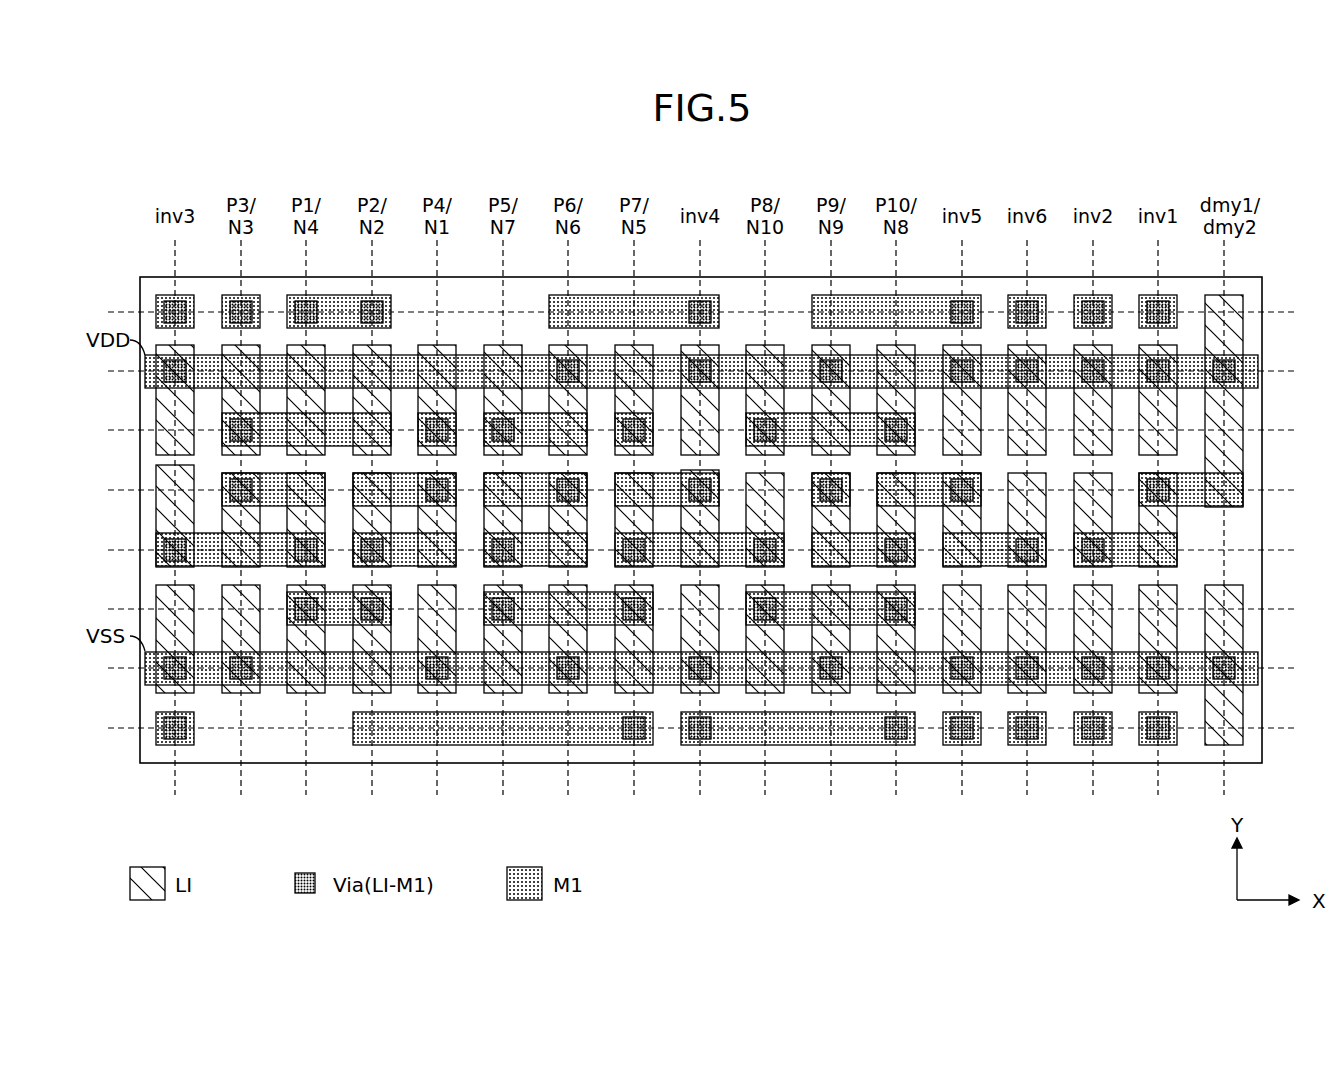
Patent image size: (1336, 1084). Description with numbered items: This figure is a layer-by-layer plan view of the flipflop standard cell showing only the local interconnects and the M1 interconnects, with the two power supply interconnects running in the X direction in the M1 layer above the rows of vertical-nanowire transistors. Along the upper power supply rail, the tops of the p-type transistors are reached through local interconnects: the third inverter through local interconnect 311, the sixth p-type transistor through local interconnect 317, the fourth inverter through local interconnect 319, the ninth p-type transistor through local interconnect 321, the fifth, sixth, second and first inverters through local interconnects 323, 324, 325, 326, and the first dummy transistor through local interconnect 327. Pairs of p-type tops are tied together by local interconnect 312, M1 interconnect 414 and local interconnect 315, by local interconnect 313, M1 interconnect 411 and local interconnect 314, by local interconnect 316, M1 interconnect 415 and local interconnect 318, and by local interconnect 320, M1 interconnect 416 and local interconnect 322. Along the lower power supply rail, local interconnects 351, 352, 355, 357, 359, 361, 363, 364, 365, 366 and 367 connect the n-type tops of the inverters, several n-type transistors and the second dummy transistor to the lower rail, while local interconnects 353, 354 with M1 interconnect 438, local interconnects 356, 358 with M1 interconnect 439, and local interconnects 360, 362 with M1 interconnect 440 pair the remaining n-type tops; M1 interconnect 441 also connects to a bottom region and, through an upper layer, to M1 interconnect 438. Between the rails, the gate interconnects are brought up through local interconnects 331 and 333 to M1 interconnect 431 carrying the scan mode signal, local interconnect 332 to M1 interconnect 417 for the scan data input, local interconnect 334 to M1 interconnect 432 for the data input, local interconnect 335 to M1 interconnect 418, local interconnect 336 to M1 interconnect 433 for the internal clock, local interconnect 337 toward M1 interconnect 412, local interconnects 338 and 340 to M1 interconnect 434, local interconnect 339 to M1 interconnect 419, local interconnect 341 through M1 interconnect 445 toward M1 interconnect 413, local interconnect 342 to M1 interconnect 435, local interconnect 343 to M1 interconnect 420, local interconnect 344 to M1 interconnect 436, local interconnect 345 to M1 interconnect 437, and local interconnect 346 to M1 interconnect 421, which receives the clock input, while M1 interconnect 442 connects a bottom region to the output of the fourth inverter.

The local interconnect 311 is at (183, 347).
The local interconnect 312 is at (249, 347).
The local interconnect 313 is at (300, 455).
The local interconnect 314 is at (365, 455).
The local interconnect 315 is at (432, 347).
The local interconnect 316 is at (490, 347).
The local interconnect 317 is at (561, 347).
The local interconnect 318 is at (624, 347).
The local interconnect 319 is at (691, 347).
The local interconnect 320 is at (778, 347).
The local interconnect 321 is at (836, 347).
The local interconnect 322 is at (910, 347).
The local interconnect 323 is at (975, 347).
The local interconnect 324 is at (1040, 347).
The local interconnect 325 is at (1106, 347).
The local interconnect 326 is at (1170, 347).
The local interconnect 327 is at (1243, 303).
The local interconnect 331 is at (196, 508).
The local interconnect 332 is at (262, 508).
The local interconnect 333 is at (327, 508).
The local interconnect 334 is at (393, 508).
The local interconnect 335 is at (459, 508).
The local interconnect 336 is at (524, 508).
The local interconnect 337 is at (590, 508).
The local interconnect 338 is at (655, 508).
The local interconnect 339 is at (719, 485).
The local interconnect 340 is at (760, 473).
The local interconnect 341 is at (812, 515).
The local interconnect 342 is at (877, 480).
The local interconnect 343 is at (982, 508).
The local interconnect 344 is at (1047, 508).
The local interconnect 345 is at (1114, 508).
The local interconnect 346 is at (1179, 508).
The local interconnect 351 is at (182, 693).
The local interconnect 352 is at (248, 693).
The local interconnect 353 is at (313, 693).
The local interconnect 354 is at (380, 693).
The local interconnect 355 is at (445, 693).
The local interconnect 356 is at (513, 693).
The local interconnect 357 is at (575, 693).
The local interconnect 358 is at (642, 693).
The local interconnect 359 is at (706, 693).
The local interconnect 360 is at (773, 694).
The local interconnect 361 is at (836, 693).
The local interconnect 362 is at (905, 693).
The local interconnect 363 is at (969, 693).
The local interconnect 364 is at (1034, 693).
The local interconnect 365 is at (1099, 693).
The local interconnect 366 is at (1164, 693).
The local interconnect 367 is at (1218, 742).
The M1 interconnect 411 is at (332, 295).
The M1 interconnect 412 is at (651, 295).
The M1 interconnect 413 is at (913, 295).
The M1 interconnect 414 is at (397, 456).
The M1 interconnect 415 is at (591, 456).
The M1 interconnect 416 is at (854, 447).
The M1 interconnect 417 is at (264, 474).
The M1 interconnect 418 is at (486, 474).
The M1 interconnect 419 is at (664, 473).
The M1 interconnect 420 is at (928, 473).
The M1 interconnect 421 is at (1199, 473).
The M1 interconnect 431 is at (266, 567).
The M1 interconnect 432 is at (400, 567).
The M1 interconnect 433 is at (533, 567).
The M1 interconnect 434 is at (734, 567).
The M1 interconnect 435 is at (863, 567).
The M1 interconnect 436 is at (990, 567).
The M1 interconnect 437 is at (1122, 567).
The M1 interconnect 438 is at (331, 592).
The M1 interconnect 439 is at (592, 590).
The M1 interconnect 440 is at (800, 592).
The M1 interconnect 441 is at (520, 745).
The M1 interconnect 442 is at (786, 743).
The M1 interconnect 445 is at (850, 505).